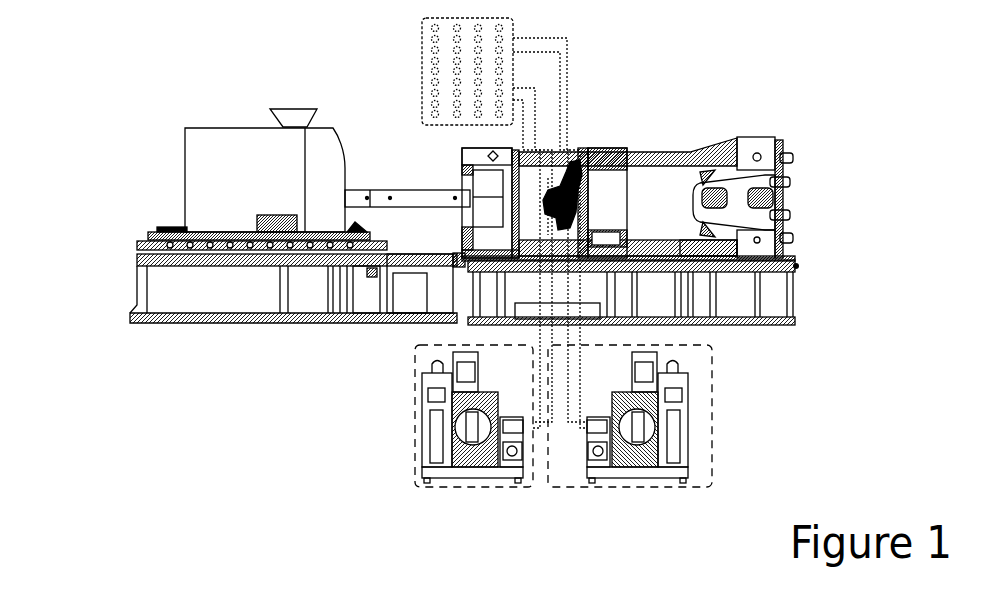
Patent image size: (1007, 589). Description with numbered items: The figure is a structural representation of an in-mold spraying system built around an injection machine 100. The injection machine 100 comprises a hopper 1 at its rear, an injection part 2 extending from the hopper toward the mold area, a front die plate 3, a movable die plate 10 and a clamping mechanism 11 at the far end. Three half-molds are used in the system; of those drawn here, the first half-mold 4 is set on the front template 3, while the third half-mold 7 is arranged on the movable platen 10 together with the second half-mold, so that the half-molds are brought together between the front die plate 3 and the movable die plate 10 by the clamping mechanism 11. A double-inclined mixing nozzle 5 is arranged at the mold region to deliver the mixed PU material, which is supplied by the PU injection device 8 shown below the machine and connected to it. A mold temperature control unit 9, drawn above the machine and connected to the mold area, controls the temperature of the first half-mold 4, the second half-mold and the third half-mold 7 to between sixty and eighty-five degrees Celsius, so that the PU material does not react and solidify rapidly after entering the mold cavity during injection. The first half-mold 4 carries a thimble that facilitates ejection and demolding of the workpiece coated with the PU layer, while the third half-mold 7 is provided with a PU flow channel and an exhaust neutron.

The injection machine 100 is at (96, 84).
The hopper 1 is at (292, 123).
The injection part 2 is at (432, 197).
The front die plate 3 is at (512, 200).
The first half-mold 4 is at (480, 243).
The double-inclined mixing nozzle 5 is at (588, 180).
The third half-mold 7 is at (578, 168).
The PU injection device 8 is at (480, 482).
The mold temperature control unit 9 is at (452, 115).
The movable die plate 10 is at (605, 190).
The clamping mechanism 11 is at (707, 150).